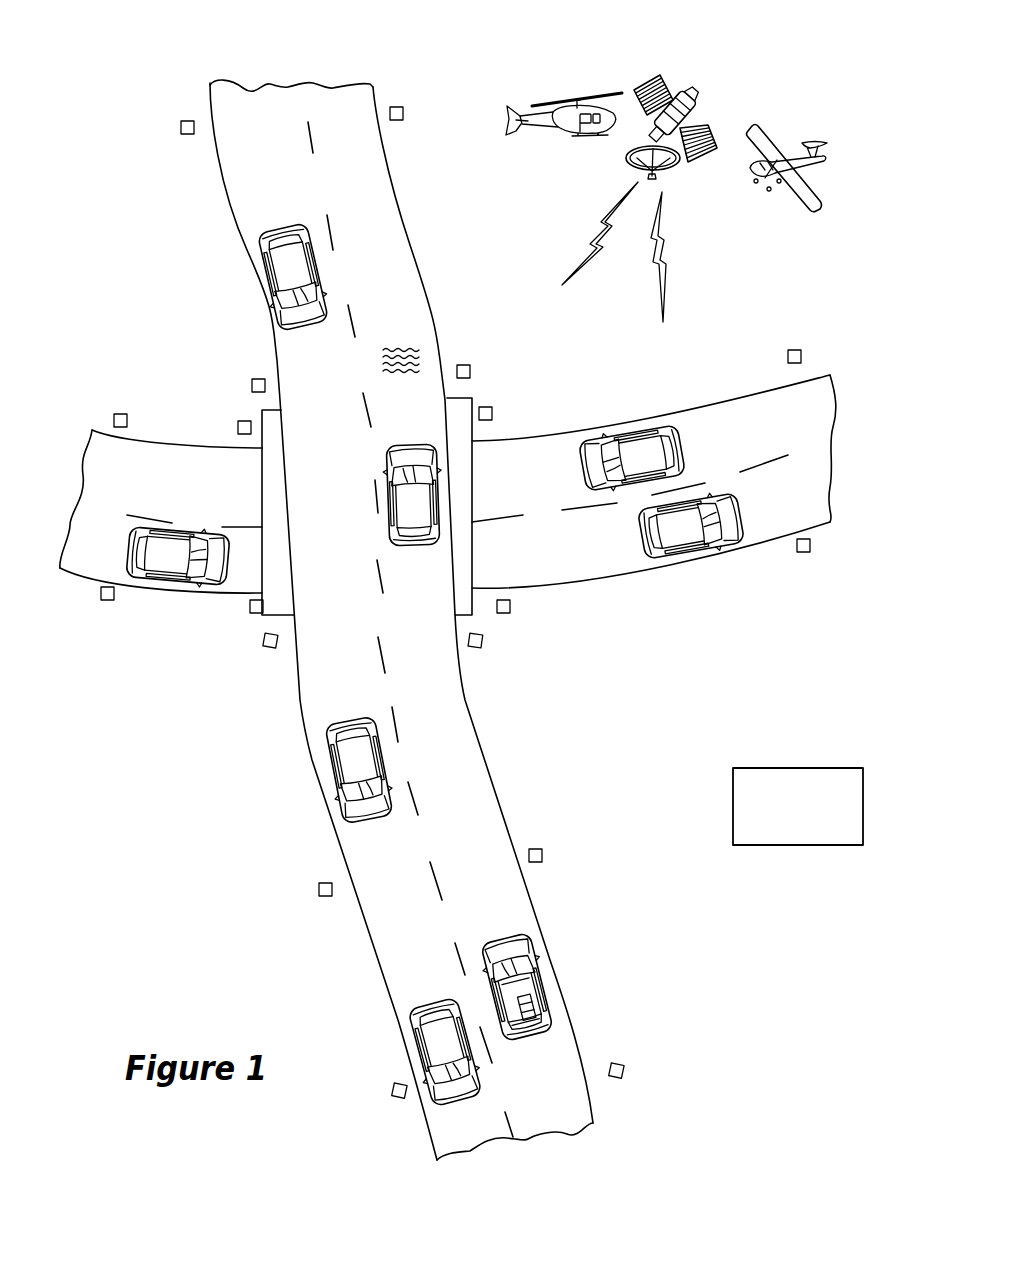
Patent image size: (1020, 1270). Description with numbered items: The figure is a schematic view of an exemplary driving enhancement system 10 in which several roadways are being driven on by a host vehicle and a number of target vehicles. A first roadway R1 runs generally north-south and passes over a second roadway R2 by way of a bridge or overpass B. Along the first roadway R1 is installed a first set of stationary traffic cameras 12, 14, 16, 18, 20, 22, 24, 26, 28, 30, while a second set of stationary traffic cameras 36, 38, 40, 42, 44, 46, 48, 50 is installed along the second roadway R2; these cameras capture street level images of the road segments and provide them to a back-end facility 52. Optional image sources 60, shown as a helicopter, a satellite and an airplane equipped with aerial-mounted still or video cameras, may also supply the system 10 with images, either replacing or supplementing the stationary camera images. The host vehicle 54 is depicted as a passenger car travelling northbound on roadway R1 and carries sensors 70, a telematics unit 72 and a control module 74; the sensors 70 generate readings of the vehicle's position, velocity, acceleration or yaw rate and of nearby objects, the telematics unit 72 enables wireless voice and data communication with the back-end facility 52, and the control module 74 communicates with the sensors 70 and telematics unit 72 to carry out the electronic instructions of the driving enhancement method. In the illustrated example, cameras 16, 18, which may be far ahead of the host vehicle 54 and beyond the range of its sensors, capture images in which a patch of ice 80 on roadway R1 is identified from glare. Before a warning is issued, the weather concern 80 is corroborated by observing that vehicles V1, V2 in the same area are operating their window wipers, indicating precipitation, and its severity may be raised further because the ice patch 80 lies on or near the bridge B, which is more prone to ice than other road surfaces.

The driving enhancement system 10 is at (460, 118).
The stationary traffic camera 12 is at (188, 136).
The stationary traffic camera 14 is at (397, 121).
The stationary traffic camera 16 is at (257, 379).
The stationary traffic camera 18 is at (466, 365).
The stationary traffic camera 20 is at (264, 641).
The stationary traffic camera 22 is at (476, 647).
The stationary traffic camera 24 is at (318, 889).
The stationary traffic camera 26 is at (543, 853).
The stationary traffic camera 28 is at (394, 1091).
The stationary traffic camera 30 is at (623, 1071).
The stationary traffic camera 36 is at (124, 414).
The stationary traffic camera 38 is at (107, 600).
The stationary traffic camera 40 is at (239, 422).
The stationary traffic camera 42 is at (250, 606).
The stationary traffic camera 44 is at (493, 413).
The stationary traffic camera 46 is at (510, 607).
The stationary traffic camera 48 is at (788, 352).
The stationary traffic camera 50 is at (803, 552).
The back-end facility 52 is at (800, 768).
The host vehicle 54 is at (537, 1023).
The optional image sources 60 is at (740, 84).
The sensors 70 is at (527, 985).
The telematics unit 72 is at (514, 1008).
The control module 74 is at (528, 1020).
The ice patch 80 is at (403, 347).
The vehicle V1 is at (410, 507).
The vehicle V2 is at (287, 257).
The first roadway R1 is at (458, 742).
The second roadway R2 is at (548, 457).
The bridge or overpass B is at (462, 410).